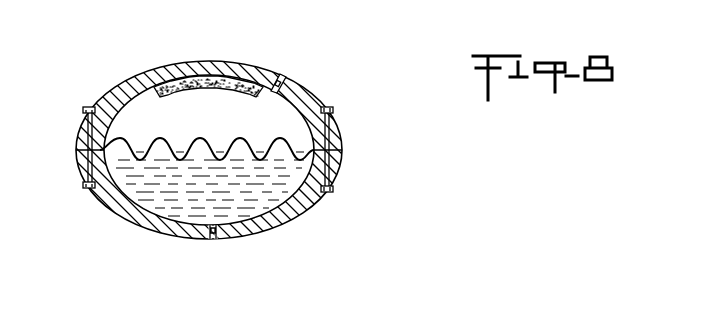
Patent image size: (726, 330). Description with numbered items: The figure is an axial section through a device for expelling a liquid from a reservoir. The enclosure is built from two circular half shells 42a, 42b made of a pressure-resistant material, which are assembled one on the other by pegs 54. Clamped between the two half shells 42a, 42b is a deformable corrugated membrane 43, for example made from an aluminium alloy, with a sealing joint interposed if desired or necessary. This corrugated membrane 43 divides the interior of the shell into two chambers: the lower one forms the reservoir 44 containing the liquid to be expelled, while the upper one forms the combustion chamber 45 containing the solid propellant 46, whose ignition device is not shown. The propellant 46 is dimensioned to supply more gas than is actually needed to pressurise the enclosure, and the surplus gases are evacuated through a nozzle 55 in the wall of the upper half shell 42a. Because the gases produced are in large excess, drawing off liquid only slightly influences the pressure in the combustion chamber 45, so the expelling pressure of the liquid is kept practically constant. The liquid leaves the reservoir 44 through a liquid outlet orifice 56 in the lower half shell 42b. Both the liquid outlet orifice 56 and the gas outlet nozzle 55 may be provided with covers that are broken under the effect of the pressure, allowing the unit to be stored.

The circular half shell 42a is at (222, 70).
The circular half shell 42b is at (170, 222).
The deformable corrugated membrane 43 is at (193, 140).
The reservoir 44 is at (140, 188).
The combustion chamber 45 is at (138, 108).
The solid propellant 46 is at (176, 92).
The pegs 54 is at (340, 129).
The nozzle 55 is at (291, 84).
The liquid outlet orifice 56 is at (211, 226).